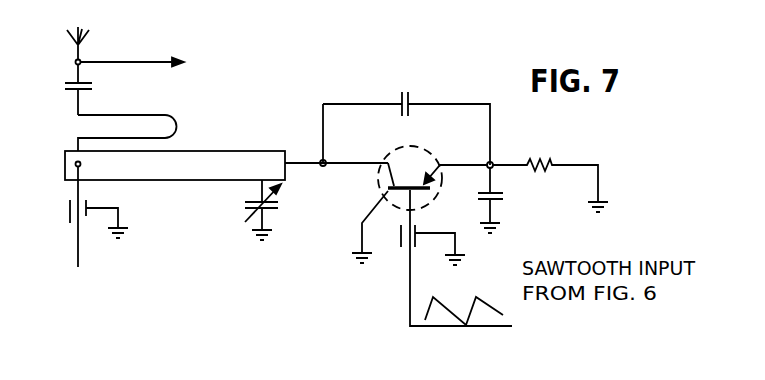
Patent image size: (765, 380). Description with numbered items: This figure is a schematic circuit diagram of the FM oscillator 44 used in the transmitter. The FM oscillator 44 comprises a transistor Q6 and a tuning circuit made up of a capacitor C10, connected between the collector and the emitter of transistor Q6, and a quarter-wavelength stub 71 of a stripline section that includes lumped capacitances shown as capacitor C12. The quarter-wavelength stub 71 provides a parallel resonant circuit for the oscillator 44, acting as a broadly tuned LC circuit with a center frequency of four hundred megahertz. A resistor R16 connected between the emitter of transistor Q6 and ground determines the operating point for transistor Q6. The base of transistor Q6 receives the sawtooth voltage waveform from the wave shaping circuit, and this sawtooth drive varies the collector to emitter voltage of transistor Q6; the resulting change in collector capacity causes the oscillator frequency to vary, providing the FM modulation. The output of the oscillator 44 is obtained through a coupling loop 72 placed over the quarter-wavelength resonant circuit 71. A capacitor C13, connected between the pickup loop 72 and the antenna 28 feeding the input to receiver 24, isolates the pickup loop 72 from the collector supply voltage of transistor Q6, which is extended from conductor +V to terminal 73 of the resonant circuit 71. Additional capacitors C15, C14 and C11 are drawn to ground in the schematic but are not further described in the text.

The antenna 28 is at (75, 62).
The receiver input 24 is at (249, 59).
The capacitor C13 is at (84, 97).
The coupling loop 72 is at (184, 97).
The terminal 73 is at (68, 164).
The bypass capacitor C15 is at (68, 212).
The capacitor C12 is at (243, 204).
The quarter-wavelength stub 71 is at (298, 124).
The capacitor C10 is at (425, 80).
The transistor Q6 is at (380, 184).
The gate bypass capacitor C14 is at (400, 256).
The capacitor C11 is at (525, 210).
The resistor R16 is at (558, 140).
The FM oscillator 44 is at (666, 179).